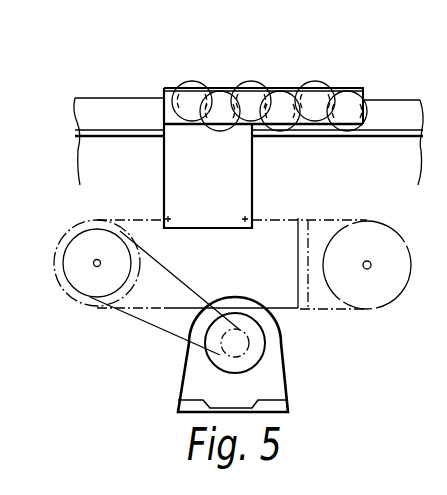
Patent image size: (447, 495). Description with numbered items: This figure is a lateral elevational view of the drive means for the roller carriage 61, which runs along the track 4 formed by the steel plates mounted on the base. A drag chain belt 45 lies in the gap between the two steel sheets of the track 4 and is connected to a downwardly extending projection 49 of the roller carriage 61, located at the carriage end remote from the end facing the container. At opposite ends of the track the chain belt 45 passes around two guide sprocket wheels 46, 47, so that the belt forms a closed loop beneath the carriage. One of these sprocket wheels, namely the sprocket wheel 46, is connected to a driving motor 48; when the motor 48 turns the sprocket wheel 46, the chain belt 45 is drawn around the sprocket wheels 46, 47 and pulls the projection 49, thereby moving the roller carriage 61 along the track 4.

The guide rail / frame 4 is at (260, 141).
The drag chain belt 45 is at (278, 220).
The guide sprocket wheel 46 is at (75, 296).
The guide sprocket wheel 47 is at (378, 288).
The driving motor 48 is at (272, 380).
The downwardly extending projection 49 is at (172, 170).
The roller carriage 61 is at (243, 80).